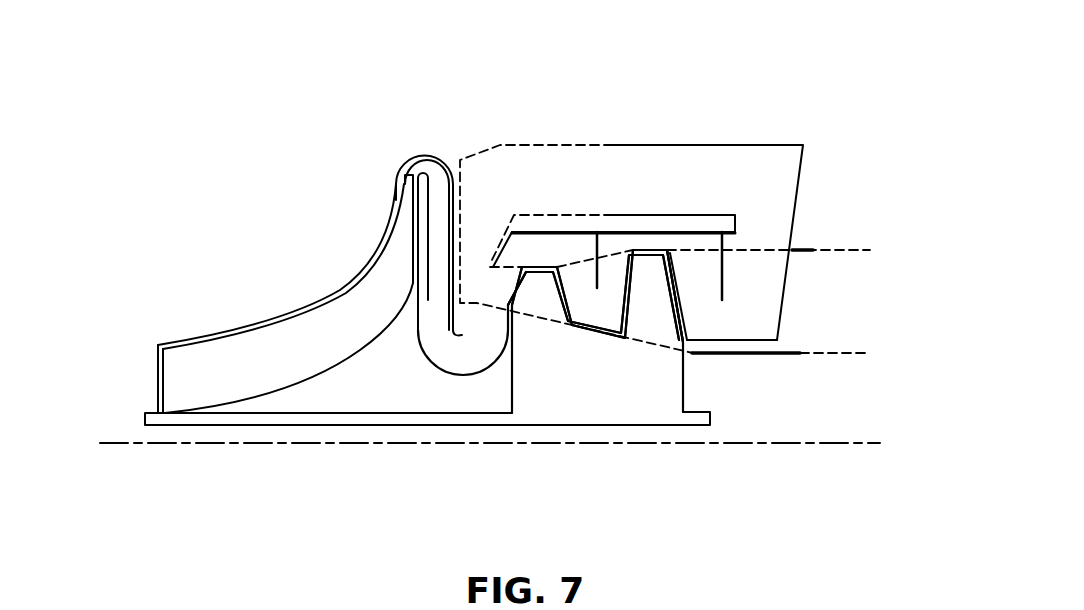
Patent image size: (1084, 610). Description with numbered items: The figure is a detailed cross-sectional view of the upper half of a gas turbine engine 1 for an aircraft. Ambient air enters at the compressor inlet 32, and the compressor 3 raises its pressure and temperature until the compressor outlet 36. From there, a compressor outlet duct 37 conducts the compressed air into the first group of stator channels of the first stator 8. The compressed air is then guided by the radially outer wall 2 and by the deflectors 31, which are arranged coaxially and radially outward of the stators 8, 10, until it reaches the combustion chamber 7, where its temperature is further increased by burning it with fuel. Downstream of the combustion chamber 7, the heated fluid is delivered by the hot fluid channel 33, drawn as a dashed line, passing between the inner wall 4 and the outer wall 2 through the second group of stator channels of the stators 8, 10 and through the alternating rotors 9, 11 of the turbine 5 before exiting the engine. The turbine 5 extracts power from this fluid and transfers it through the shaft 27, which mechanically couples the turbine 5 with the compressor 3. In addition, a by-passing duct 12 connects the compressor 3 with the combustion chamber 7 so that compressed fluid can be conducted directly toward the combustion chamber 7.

The gas turbine engine 1 is at (568, 118).
The outer wall 2 is at (533, 267).
The compressor 3 is at (300, 358).
The inner wall 4 is at (497, 272).
The turbine 5 is at (576, 383).
The combustion chamber 7 is at (680, 172).
The first stator 8 is at (502, 287).
The rotor 9 is at (541, 297).
The stator 10 is at (598, 333).
The rotor 11 is at (642, 318).
The by-passing duct 12 is at (735, 310).
The shaft 27 is at (711, 420).
The deflector 31 is at (597, 233).
The compressor inlet 32 is at (158, 375).
The hot fluid channel 33 is at (598, 143).
The compressor outlet 36 is at (407, 173).
The compressor outlet duct 37 is at (441, 270).